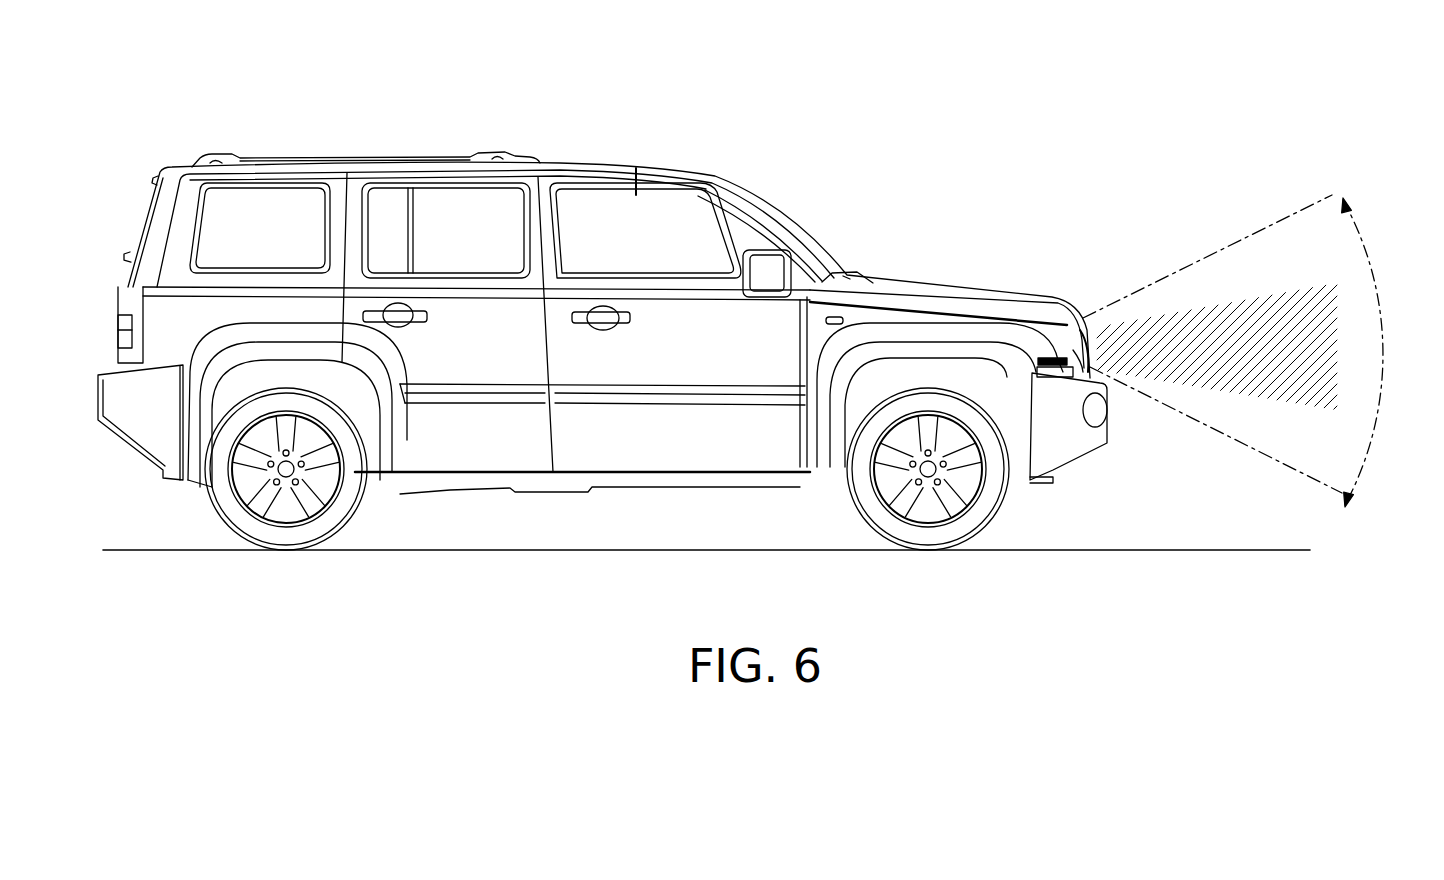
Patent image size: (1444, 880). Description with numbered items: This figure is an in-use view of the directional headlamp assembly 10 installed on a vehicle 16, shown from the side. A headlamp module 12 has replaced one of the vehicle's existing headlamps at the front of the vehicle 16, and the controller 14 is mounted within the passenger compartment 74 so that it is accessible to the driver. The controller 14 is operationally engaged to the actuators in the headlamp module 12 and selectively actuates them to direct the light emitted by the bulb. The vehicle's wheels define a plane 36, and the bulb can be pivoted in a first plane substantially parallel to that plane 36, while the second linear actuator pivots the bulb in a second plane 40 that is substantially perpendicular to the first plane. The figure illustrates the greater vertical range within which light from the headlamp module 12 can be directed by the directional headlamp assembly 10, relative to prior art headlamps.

The directional headlamp assembly 10 is at (993, 140).
The headlamp module 12 is at (1086, 330).
The controller 14 is at (695, 253).
The vehicle 16 is at (600, 160).
The plane 36 is at (614, 562).
The second plane 40 is at (1388, 326).
The passenger compartment 74 is at (637, 235).